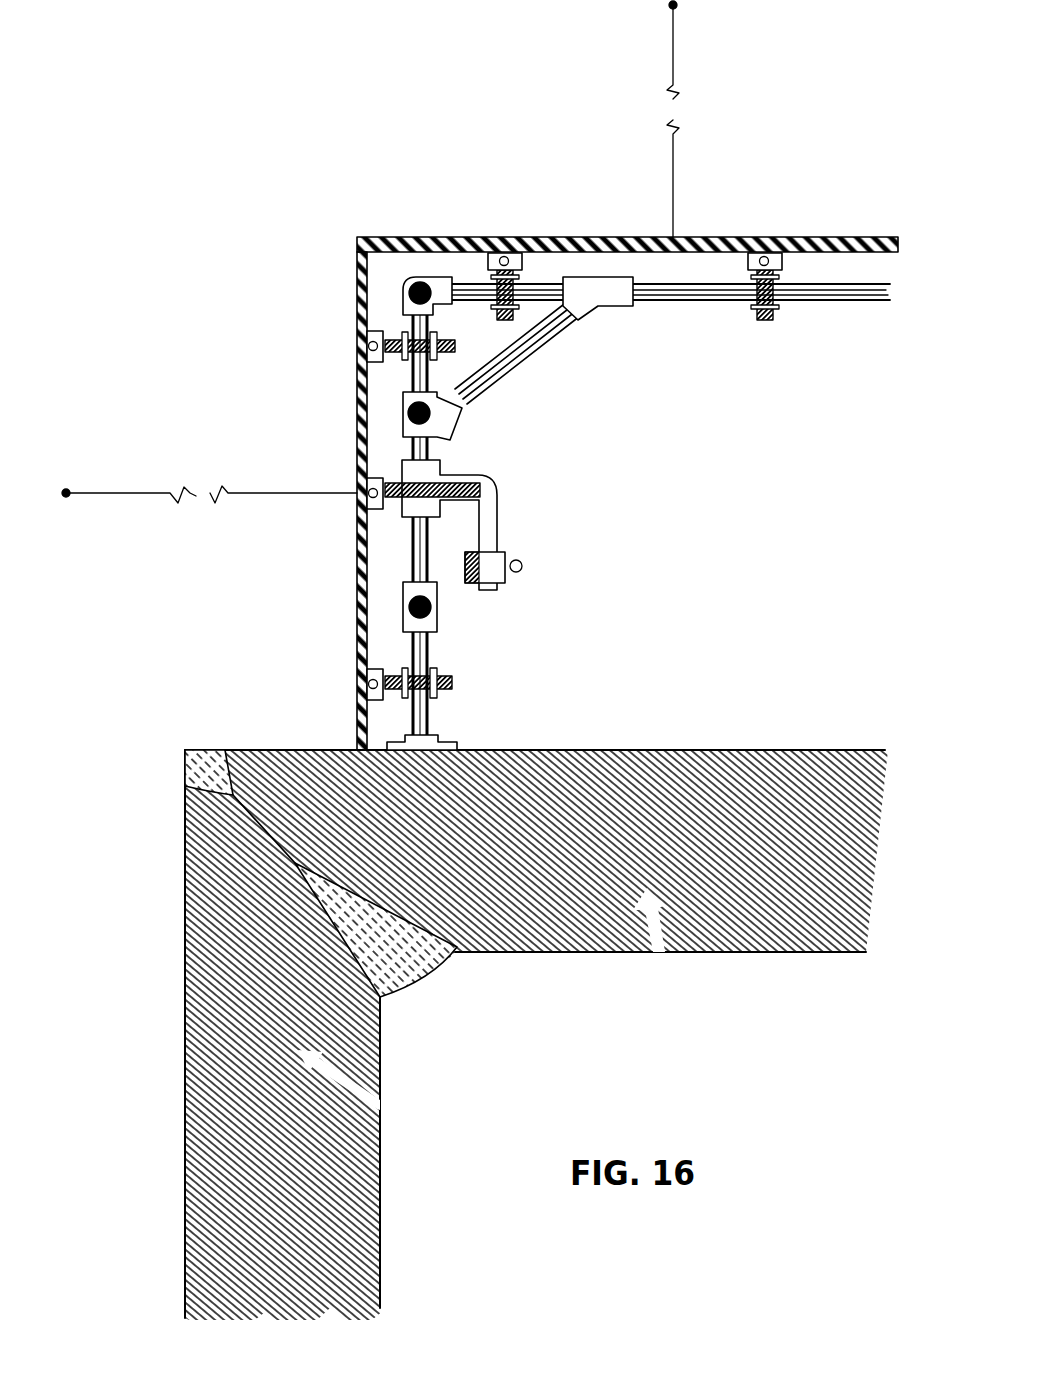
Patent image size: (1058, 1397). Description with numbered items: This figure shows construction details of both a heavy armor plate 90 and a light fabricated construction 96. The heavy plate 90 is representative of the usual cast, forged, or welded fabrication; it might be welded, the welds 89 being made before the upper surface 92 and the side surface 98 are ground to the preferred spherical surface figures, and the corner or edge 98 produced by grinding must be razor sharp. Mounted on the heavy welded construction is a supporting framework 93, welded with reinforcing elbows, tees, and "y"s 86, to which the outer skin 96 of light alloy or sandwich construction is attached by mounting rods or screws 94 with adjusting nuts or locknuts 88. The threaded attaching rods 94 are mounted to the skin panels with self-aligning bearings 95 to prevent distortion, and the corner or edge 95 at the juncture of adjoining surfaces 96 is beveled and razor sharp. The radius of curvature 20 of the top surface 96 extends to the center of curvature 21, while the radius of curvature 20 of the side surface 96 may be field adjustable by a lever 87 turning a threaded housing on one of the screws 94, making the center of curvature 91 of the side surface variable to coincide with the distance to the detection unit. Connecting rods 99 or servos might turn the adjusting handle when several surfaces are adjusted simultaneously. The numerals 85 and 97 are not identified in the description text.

The radius of curvature 20 is at (663, 10).
The center of curvature 21 is at (680, 8).
The clamp block 85 is at (506, 262).
The reinforcing elbows, tees, and "y"s 86 is at (440, 292).
The lever 87 is at (483, 499).
The adjusting nuts or locknuts 88 is at (402, 340).
The welds 89 is at (208, 790).
The heavy armor plate 90 is at (648, 902).
The center of curvature 91 is at (68, 483).
The upper surface 92 is at (715, 750).
The supporting framework 93 is at (418, 458).
The mounting rods or screws 94 is at (480, 346).
The corner or edge 95 is at (357, 237).
The light fabricated sheet 96 is at (695, 250).
The joint seam 97 is at (185, 748).
The side surface 98 is at (185, 1050).
The connecting rods 99 is at (522, 566).